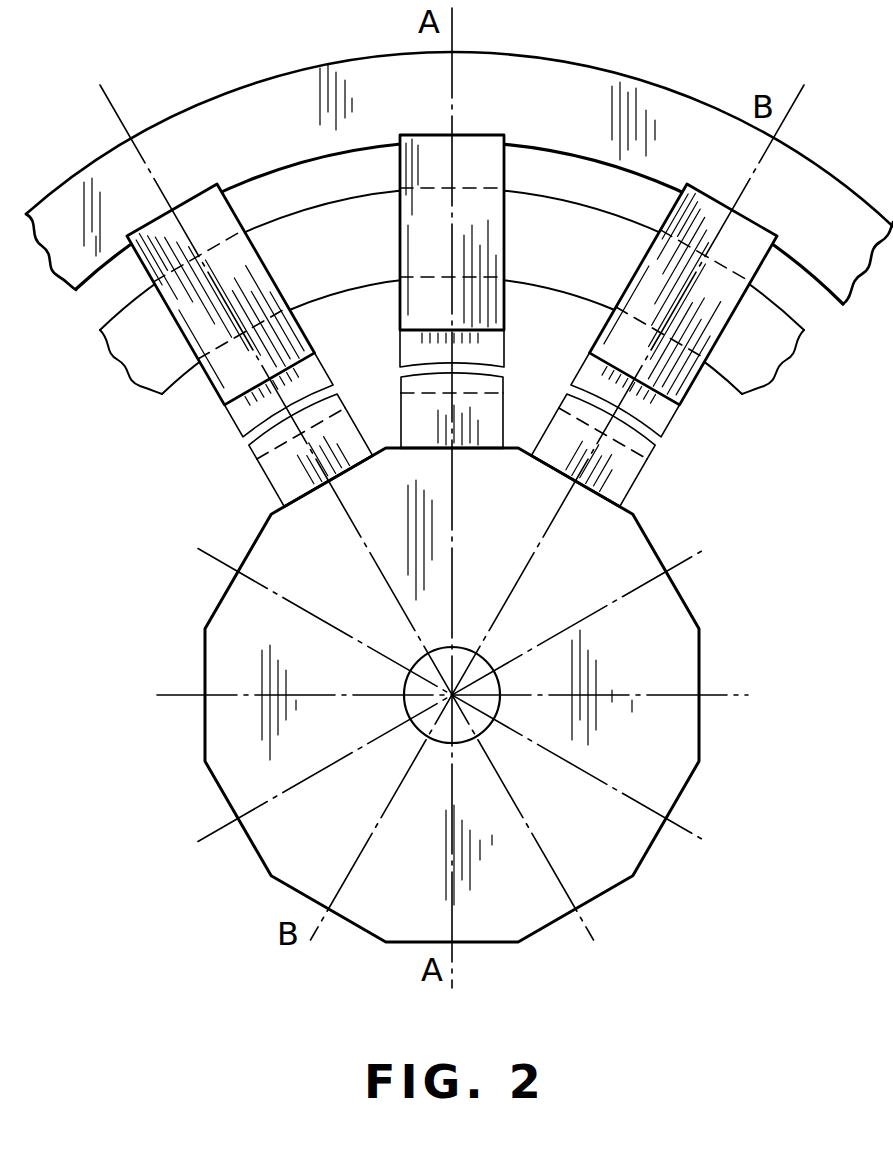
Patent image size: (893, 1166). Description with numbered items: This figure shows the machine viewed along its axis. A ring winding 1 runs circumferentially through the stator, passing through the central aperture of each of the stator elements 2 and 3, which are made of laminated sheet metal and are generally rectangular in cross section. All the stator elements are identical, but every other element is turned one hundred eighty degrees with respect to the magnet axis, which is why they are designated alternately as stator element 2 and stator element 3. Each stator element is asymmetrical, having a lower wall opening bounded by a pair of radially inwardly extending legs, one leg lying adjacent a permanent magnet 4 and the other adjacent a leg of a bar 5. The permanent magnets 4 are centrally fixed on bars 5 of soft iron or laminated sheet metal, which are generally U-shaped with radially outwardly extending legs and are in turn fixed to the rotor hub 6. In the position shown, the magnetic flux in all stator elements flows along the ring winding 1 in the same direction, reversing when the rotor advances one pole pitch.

The ring winding 1 is at (778, 343).
The stator element 2 is at (486, 150).
The stator element 3 is at (207, 198).
The permanent magnet 4 is at (412, 386).
The bar of soft iron or laminated sheet metal 5 is at (285, 473).
The rotor hub 6 is at (687, 663).